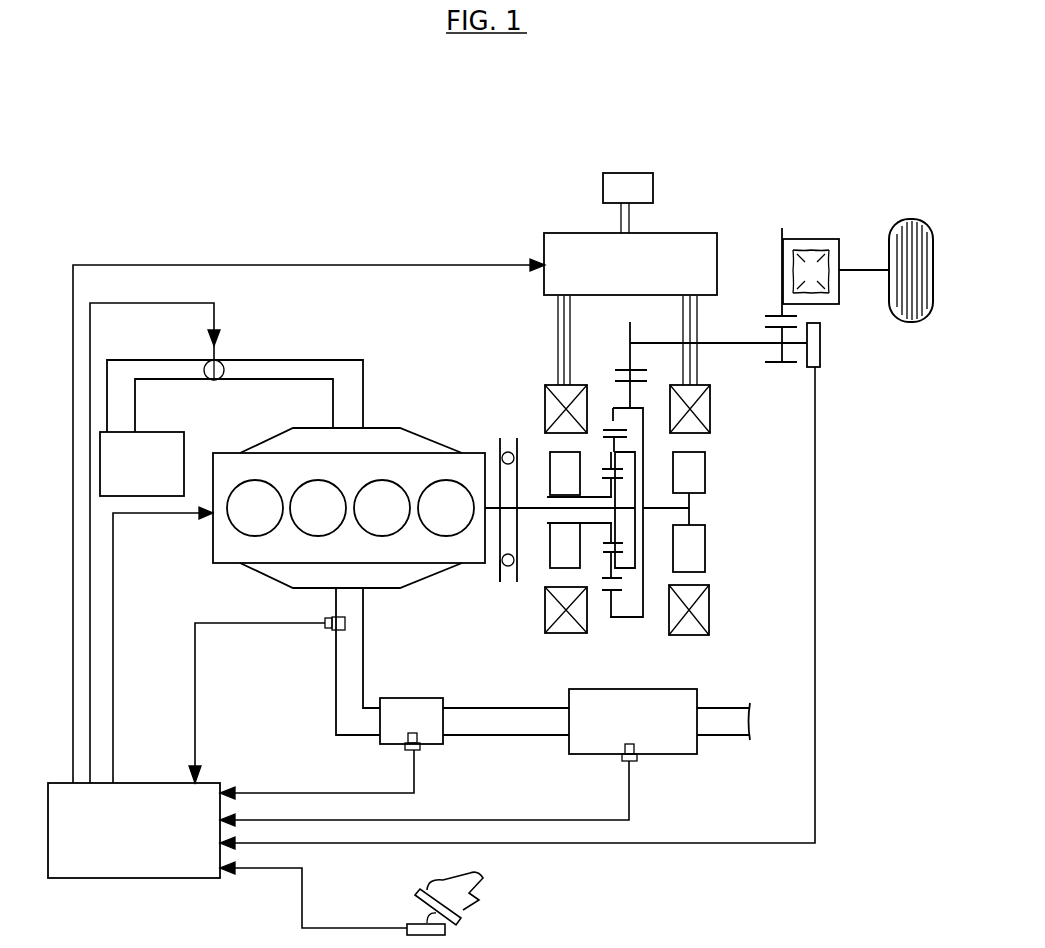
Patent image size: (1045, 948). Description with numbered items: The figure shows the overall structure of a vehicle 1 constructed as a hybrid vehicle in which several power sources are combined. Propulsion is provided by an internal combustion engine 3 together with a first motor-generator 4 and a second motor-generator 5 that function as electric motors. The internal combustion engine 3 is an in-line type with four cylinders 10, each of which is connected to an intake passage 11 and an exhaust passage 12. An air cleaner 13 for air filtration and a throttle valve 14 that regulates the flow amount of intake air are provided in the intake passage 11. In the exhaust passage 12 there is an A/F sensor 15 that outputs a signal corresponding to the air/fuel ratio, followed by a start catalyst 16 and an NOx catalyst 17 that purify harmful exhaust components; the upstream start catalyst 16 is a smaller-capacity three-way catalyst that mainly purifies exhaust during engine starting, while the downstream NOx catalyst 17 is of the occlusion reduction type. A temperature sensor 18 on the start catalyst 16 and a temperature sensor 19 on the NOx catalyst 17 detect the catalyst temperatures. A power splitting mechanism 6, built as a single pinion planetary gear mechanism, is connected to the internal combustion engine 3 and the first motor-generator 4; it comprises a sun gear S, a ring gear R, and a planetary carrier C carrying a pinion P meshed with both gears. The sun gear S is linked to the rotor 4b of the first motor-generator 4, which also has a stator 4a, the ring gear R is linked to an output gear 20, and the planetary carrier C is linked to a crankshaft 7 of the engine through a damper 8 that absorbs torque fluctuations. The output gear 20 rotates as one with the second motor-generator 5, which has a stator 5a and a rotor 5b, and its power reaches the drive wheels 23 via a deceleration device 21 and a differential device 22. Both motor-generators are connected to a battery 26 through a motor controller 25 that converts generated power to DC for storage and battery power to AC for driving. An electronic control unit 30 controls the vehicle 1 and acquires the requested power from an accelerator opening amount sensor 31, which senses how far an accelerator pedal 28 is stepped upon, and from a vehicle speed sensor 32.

The vehicle 1 is at (484, 159).
The internal combustion engine 3 is at (338, 466).
The first motor-generator 4 is at (553, 464).
The stator 4a is at (548, 428).
The rotor 4b is at (549, 570).
The second motor-generator 5 is at (721, 472).
The stator 5a is at (712, 430).
The rotor 5b is at (705, 536).
The power splitting mechanism 6 is at (625, 470).
The crankshaft 7 is at (496, 500).
The damper 8 is at (500, 572).
The cylinders 10 is at (262, 531).
The intake passage 11 is at (303, 360).
The exhaust passage 12 is at (365, 615).
The air cleaner 13 is at (158, 432).
The throttle valve 14 is at (206, 363).
The A/F sensor 15 is at (330, 634).
The start catalyst 16 is at (400, 705).
The NOx catalyst 17 is at (569, 690).
The temperature sensor 18 is at (418, 748).
The temperature sensor 19 is at (637, 758).
The output gear 20 is at (645, 388).
The deceleration device 21 is at (729, 360).
The differential device 22 is at (808, 244).
The drive wheels 23 is at (913, 219).
The motor controller 25 is at (543, 240).
The battery 26 is at (603, 190).
The accelerator pedal 28 is at (418, 893).
The electronic control unit 30 is at (150, 782).
The accelerator opening amount sensor 31 is at (410, 918).
The vehicle speed sensor 32 is at (821, 345).
The ring gear R is at (614, 424).
The sun gear S is at (611, 490).
The pinion P is at (612, 574).
The planetary carrier C is at (644, 493).